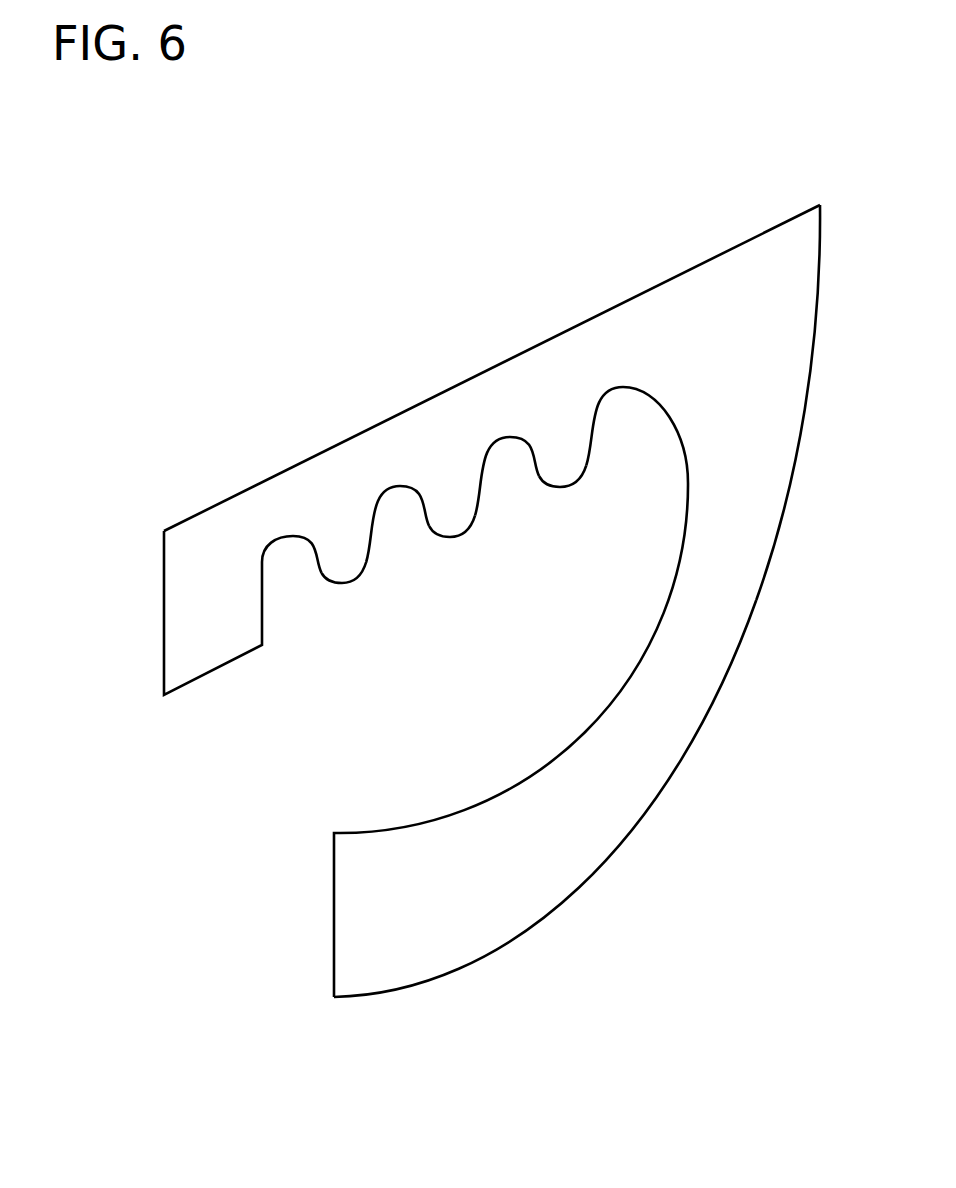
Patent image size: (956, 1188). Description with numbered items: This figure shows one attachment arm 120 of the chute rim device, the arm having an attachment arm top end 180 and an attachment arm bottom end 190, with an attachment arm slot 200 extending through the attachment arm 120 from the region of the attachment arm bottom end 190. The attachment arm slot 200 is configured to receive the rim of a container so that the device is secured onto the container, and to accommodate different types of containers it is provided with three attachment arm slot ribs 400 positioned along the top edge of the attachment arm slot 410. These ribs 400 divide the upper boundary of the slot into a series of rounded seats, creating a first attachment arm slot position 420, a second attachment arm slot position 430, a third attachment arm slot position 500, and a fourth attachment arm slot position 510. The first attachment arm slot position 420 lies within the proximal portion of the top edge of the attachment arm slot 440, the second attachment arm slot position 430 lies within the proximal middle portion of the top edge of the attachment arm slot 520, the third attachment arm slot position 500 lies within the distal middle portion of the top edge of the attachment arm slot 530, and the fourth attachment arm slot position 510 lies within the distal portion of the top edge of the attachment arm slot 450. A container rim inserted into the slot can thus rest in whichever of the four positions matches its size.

The attachment arm 120 is at (688, 699).
The attachment arm top end 180 is at (767, 327).
The attachment arm bottom end 190 is at (428, 920).
The attachment arm slot 200 is at (325, 725).
The attachment arm slot rib 400 is at (360, 559).
The top edge of the attachment arm slot 410 is at (439, 427).
The first attachment arm slot position 420 is at (299, 564).
The second attachment arm slot position 430 is at (408, 516).
The proximal portion of the top edge of the attachment arm slot 440 is at (280, 558).
The distal portion of the top edge of the attachment arm slot 450 is at (624, 408).
The third attachment arm slot position 500 is at (502, 476).
The fourth attachment arm slot position 510 is at (616, 426).
The proximal middle portion of the top edge of the attachment arm slot 520 is at (398, 508).
The distal middle portion of the top edge of the attachment arm slot 530 is at (508, 457).